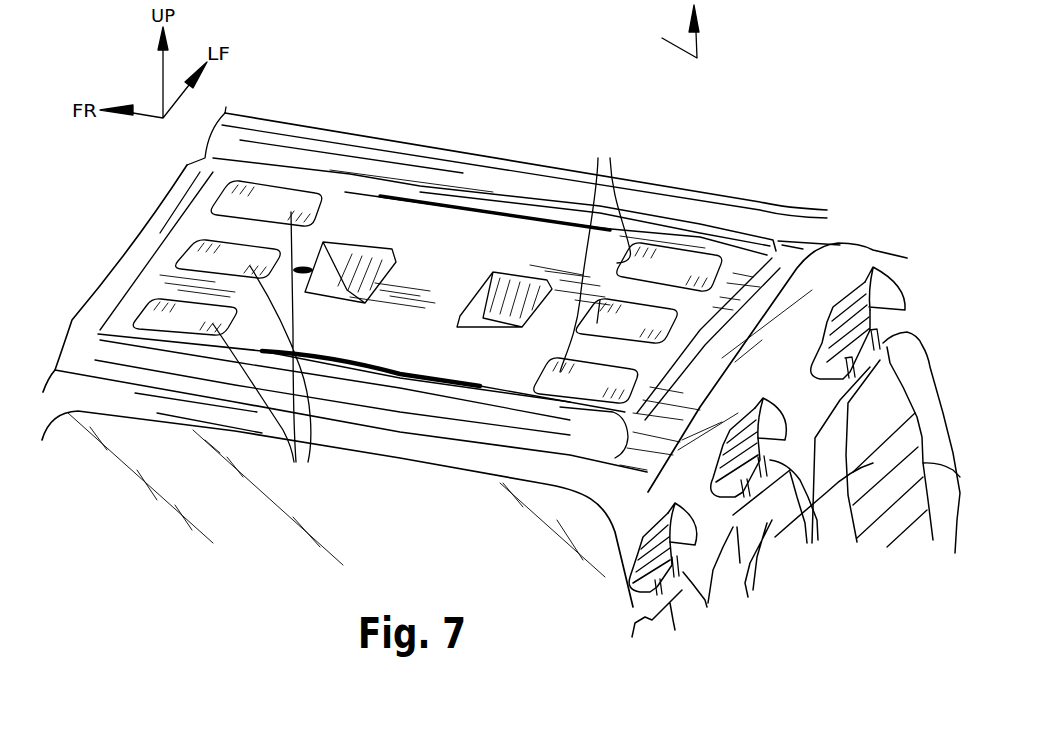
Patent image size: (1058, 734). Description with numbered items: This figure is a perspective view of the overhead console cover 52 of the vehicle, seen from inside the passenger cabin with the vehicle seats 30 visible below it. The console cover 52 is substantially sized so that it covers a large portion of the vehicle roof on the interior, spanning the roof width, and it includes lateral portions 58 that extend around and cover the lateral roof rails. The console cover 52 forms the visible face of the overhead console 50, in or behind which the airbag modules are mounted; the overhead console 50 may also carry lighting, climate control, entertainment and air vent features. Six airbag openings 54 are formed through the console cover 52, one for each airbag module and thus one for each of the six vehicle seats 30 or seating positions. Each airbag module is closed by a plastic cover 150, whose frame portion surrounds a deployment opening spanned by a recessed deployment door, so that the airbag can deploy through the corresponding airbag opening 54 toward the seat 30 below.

The vehicle seat 30 is at (673, 630).
The overhead console 50 is at (426, 114).
The overhead console cover 52 is at (507, 162).
The airbag opening 54 is at (147, 320).
The lateral portion 58 is at (497, 197).
The cover 150 is at (421, 312).